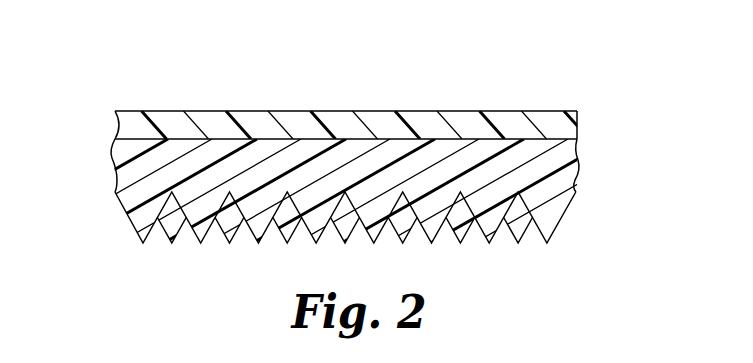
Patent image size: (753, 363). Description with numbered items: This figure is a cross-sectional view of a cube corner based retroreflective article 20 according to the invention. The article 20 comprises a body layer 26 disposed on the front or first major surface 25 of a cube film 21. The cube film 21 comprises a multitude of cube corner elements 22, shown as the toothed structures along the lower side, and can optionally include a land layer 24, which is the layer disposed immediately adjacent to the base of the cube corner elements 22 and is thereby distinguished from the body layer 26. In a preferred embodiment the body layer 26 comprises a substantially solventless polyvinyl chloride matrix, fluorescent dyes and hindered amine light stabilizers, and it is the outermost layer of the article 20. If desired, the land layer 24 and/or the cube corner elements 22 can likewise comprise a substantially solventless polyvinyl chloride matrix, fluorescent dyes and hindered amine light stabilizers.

The retroreflective article 20 is at (558, 62).
The cube film 21 is at (162, 183).
The cube corner elements 22 is at (192, 243).
The land layer 24 is at (328, 230).
The first major surface 25 is at (497, 139).
The body layer 26 is at (377, 118).